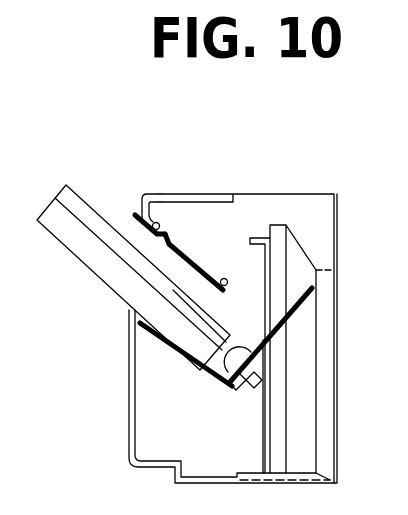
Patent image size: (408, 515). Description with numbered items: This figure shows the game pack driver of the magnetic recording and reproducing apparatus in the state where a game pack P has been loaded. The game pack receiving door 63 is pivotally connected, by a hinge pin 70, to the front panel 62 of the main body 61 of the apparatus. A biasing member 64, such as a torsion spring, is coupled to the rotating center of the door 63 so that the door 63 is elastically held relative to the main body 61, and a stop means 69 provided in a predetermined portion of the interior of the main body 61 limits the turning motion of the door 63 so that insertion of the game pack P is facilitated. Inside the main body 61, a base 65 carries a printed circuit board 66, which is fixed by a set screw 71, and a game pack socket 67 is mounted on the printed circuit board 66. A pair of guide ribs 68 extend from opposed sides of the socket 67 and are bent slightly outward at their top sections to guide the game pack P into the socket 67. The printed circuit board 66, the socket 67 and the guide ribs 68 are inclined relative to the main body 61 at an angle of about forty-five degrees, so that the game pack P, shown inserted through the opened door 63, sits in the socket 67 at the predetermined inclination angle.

The game pack P is at (115, 266).
The main body 61 is at (206, 192).
The front panel 62 is at (137, 443).
The game pack receiving door 63 is at (198, 262).
The biasing member 64 is at (146, 208).
The base 65 is at (245, 393).
The printed circuit board 66 is at (305, 327).
The game pack socket 67 is at (172, 352).
The guide ribs 68 is at (303, 277).
The stop means 69 is at (225, 277).
The hinge pin 70 is at (156, 212).
The set screw 71 is at (225, 381).